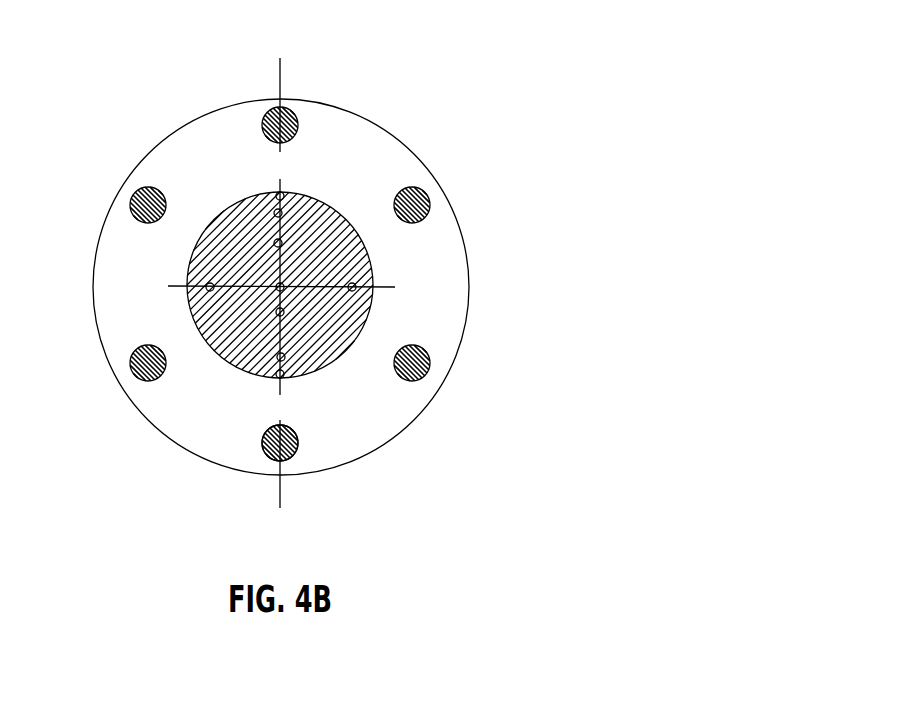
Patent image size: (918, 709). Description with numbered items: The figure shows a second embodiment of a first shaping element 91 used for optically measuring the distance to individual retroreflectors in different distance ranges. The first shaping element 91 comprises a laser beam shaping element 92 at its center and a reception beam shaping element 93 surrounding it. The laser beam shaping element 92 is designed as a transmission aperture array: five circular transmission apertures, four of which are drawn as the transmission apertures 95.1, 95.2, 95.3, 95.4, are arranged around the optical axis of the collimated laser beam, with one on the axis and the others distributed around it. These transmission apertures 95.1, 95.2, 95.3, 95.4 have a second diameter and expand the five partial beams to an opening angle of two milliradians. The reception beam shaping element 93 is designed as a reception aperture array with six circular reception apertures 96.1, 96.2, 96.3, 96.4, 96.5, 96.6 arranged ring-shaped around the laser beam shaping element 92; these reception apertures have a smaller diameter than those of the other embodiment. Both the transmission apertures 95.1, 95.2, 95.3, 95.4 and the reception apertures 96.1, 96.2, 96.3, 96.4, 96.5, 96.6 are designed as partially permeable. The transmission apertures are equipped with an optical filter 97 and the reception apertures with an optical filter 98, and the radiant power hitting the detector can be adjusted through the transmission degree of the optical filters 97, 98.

The first shaping element 91 is at (311, 287).
The laser beam shaping element 92 is at (332, 209).
The reception beam shaping element 93 is at (186, 413).
The transmission aperture 95.1 is at (393, 286).
The transmission aperture 95.2 is at (280, 175).
The transmission aperture 95.3 is at (170, 286).
The transmission aperture 95.4 is at (281, 397).
The reception aperture 96.1 is at (430, 207).
The reception aperture 96.2 is at (281, 86).
The reception aperture 96.3 is at (130, 207).
The reception aperture 96.4 is at (130, 363).
The reception aperture 96.5 is at (281, 485).
The reception aperture 96.6 is at (430, 365).
The optical filter 97 is at (226, 214).
The optical filter 98 is at (298, 443).